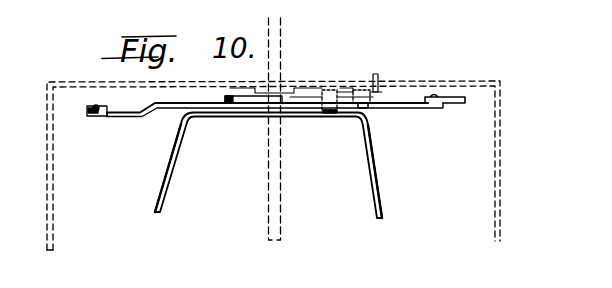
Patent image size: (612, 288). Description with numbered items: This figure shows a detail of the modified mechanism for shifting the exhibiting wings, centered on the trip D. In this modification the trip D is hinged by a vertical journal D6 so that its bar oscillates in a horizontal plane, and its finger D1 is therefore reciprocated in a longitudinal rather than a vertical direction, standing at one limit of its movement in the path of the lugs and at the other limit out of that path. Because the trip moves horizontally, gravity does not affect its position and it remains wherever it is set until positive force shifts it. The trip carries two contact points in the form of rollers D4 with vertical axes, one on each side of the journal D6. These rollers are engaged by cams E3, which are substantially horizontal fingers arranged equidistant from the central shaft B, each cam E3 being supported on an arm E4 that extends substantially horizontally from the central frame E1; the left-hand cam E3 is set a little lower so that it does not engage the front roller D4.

The central shaft B is at (285, 170).
The trip D is at (331, 89).
The finger D1 is at (384, 70).
The roller D4 is at (373, 117).
The vertical journal D6 is at (353, 88).
The central frame E1 is at (170, 177).
The cam E3 is at (462, 113).
The arm E4 is at (137, 113).